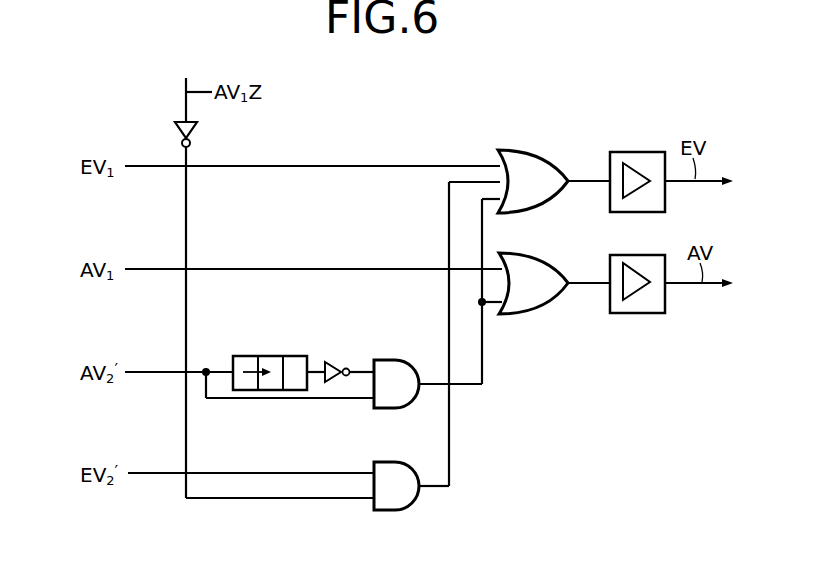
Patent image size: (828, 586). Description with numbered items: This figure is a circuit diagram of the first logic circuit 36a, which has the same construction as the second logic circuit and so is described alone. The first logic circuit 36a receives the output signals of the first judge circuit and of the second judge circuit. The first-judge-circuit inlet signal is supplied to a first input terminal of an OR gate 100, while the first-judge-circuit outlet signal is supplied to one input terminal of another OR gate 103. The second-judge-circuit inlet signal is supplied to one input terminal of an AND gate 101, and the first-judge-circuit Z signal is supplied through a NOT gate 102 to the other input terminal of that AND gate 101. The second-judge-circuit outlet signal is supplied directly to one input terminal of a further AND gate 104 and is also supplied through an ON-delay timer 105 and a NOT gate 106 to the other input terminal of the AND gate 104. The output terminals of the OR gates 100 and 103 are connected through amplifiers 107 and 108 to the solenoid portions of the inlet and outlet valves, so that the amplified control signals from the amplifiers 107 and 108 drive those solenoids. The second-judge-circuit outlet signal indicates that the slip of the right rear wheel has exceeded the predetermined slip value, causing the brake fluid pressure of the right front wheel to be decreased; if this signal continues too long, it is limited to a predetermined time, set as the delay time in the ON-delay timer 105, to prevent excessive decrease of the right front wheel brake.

The OR gate 100 is at (527, 149).
The AND gate 101 is at (392, 511).
The NOT gate 102 is at (197, 135).
The OR gate 103 is at (520, 316).
The AND gate 104 is at (386, 359).
The ON-delay timer 105 is at (268, 356).
The NOT gate 106 is at (330, 361).
The amplifier 107 is at (632, 152).
The amplifier 108 is at (642, 314).
The first logic circuit 36a is at (576, 140).